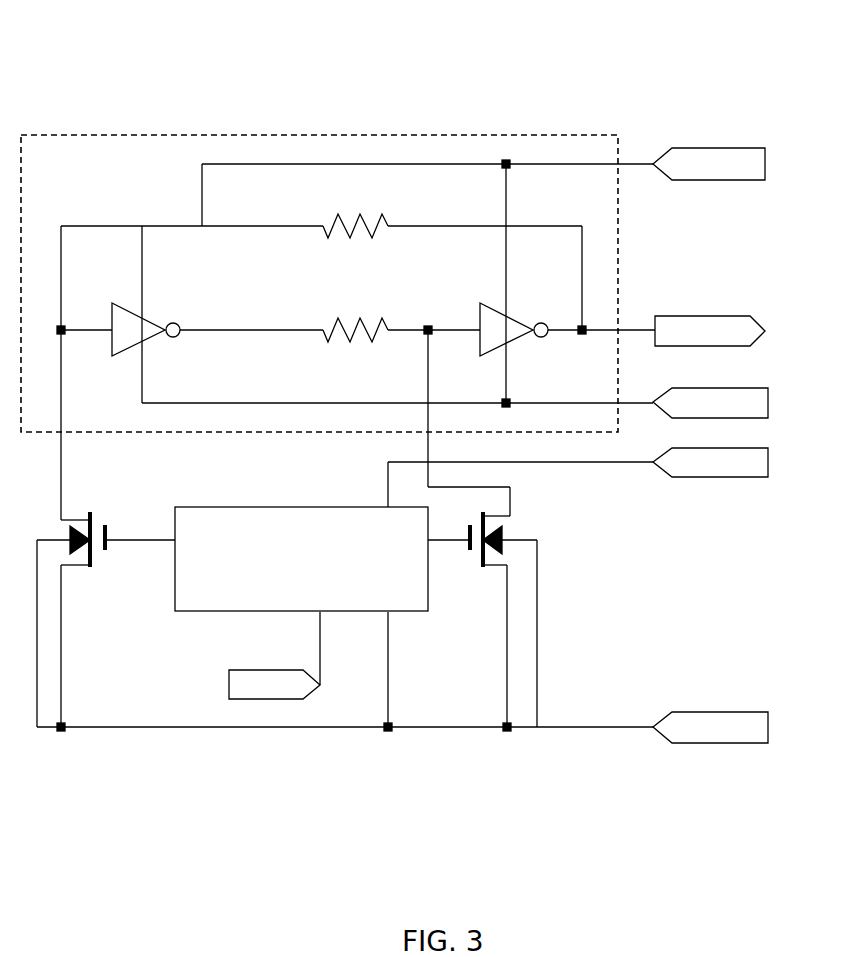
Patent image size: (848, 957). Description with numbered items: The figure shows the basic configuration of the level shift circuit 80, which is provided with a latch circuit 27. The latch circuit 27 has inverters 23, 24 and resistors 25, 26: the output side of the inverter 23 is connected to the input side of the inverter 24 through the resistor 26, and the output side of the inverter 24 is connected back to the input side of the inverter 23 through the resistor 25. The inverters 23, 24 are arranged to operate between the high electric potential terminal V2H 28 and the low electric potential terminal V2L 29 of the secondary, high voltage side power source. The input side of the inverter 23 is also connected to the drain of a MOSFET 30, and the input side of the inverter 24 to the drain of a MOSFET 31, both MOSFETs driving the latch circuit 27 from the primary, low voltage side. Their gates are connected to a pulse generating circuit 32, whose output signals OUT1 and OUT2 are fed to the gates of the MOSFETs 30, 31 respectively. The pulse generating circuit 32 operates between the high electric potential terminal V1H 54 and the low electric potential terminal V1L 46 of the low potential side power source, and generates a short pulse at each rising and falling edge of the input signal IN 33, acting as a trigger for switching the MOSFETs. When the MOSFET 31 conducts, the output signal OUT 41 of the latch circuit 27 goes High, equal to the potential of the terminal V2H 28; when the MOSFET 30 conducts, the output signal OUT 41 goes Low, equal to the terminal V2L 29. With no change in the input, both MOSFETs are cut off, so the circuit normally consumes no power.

The level shift circuit 80 is at (645, 80).
The latch circuit 27 is at (358, 134).
The inverter 23 is at (147, 318).
The inverter 24 is at (518, 318).
The resistor 25 is at (349, 214).
The resistor 26 is at (349, 320).
The high electric potential terminal V2H 28 is at (718, 147).
The output signal OUT 41 is at (702, 316).
The low electric potential terminal V2L 29 is at (768, 404).
The high electric potential terminal V1H 54 is at (768, 463).
The low electric potential terminal V1L 46 is at (768, 728).
The input signal IN 33 is at (229, 686).
The MOSFET 30 is at (100, 518).
The MOSFET 31 is at (508, 530).
The pulse generating circuit 32 is at (322, 506).